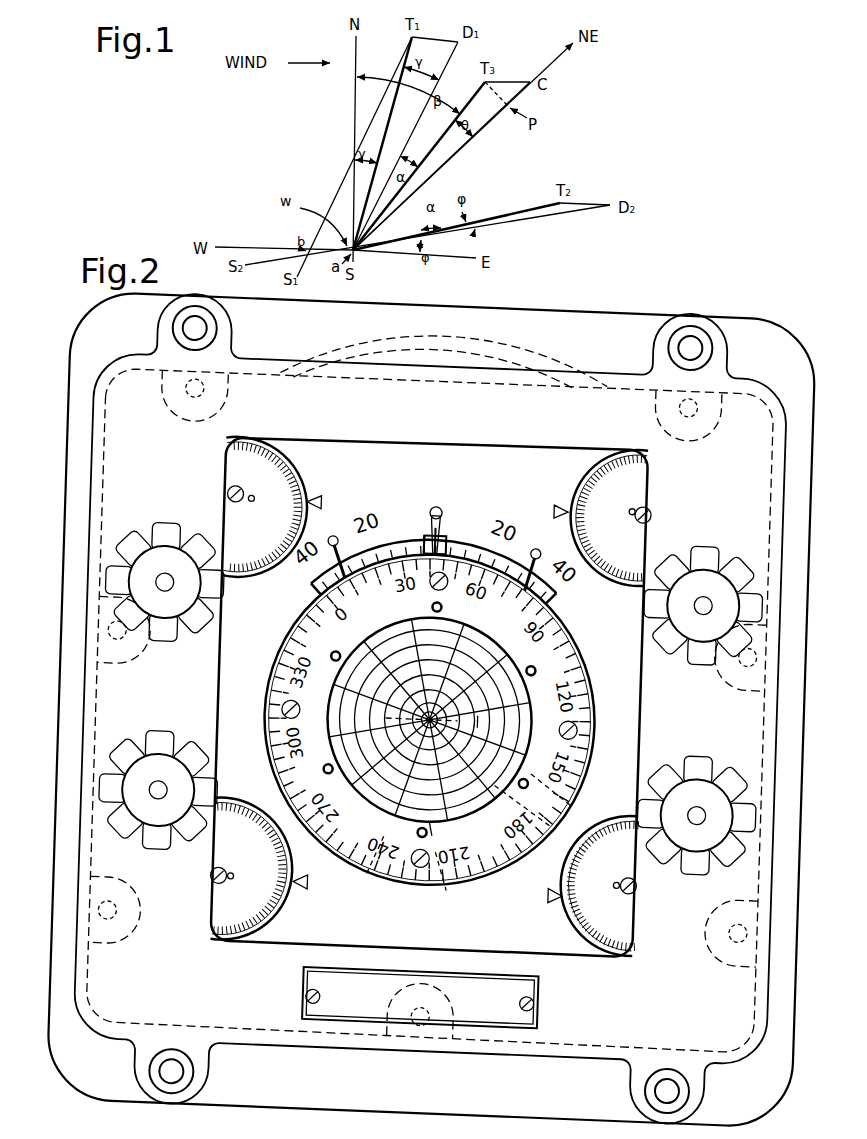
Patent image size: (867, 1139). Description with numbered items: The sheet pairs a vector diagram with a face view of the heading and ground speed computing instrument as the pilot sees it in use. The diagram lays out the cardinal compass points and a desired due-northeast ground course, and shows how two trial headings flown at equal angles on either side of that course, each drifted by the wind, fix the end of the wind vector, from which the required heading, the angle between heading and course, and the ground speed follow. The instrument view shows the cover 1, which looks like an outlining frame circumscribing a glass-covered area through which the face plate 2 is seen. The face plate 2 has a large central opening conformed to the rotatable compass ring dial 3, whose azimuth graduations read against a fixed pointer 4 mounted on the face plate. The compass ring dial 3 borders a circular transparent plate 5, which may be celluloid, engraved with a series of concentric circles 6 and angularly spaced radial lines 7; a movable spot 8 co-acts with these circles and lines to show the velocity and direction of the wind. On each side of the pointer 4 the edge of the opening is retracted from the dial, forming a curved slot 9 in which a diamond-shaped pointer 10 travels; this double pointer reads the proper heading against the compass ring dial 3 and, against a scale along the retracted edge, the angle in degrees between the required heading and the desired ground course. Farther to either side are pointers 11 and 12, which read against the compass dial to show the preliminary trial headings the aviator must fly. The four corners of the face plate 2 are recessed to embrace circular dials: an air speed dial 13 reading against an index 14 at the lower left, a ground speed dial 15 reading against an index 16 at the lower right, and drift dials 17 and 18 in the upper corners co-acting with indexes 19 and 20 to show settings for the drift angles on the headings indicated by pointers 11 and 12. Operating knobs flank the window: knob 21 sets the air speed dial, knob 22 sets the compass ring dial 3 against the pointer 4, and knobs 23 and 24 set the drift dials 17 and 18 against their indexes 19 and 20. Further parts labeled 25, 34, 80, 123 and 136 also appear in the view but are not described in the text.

The cover 1 is at (282, 1108).
The face plate 2 is at (372, 943).
The compass ring dial 3 is at (372, 877).
The fixed pointer 4 is at (435, 538).
The transparent plate 5 is at (440, 865).
The concentric circles 6 is at (530, 816).
The radial lines 7 is at (558, 798).
The movable spot 8 is at (422, 720).
The curved slot 9 is at (424, 528).
The diamond-shaped pointer 10 is at (442, 546).
The pointer 11 is at (345, 548).
The pointer 12 is at (528, 564).
The air speed dial 13 is at (224, 912).
The index 14 is at (308, 880).
The ground speed dial 15 is at (642, 912).
The index 16 is at (557, 885).
The drift dial 17 is at (226, 470).
The drift dial 18 is at (638, 494).
The index 19 is at (310, 503).
The index 20 is at (555, 506).
The knob 21 is at (158, 780).
The knob 22 is at (697, 812).
The knob 23 is at (164, 584).
The knob 24 is at (702, 629).
The course knob shaft 25 is at (691, 792).
The air speed knob shaft 34 is at (168, 790).
The slot edge 80 is at (418, 546).
The drift knob shaft 123 is at (163, 601).
The drift knob shaft 136 is at (697, 604).